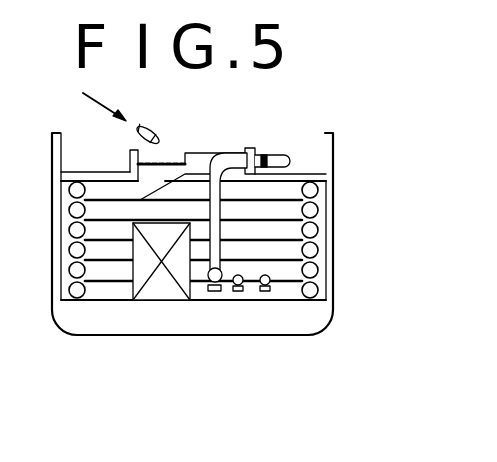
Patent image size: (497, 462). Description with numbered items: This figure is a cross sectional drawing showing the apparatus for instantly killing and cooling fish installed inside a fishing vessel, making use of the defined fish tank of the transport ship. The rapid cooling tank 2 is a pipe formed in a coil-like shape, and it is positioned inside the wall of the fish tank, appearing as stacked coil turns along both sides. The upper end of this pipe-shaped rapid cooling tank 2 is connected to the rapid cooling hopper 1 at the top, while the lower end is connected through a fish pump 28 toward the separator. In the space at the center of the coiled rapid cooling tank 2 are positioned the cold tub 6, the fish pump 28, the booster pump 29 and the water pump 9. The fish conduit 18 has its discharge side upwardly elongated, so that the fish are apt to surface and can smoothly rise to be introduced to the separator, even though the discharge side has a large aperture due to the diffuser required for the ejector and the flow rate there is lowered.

The rapid cooling hopper 1 is at (176, 160).
The rapid cooling tank 2 is at (313, 192).
The fish conduit 18 is at (218, 231).
The cold tub 6 is at (155, 297).
The fish pump 28 is at (211, 291).
The booster pump 29 is at (238, 291).
The water pump 9 is at (266, 291).